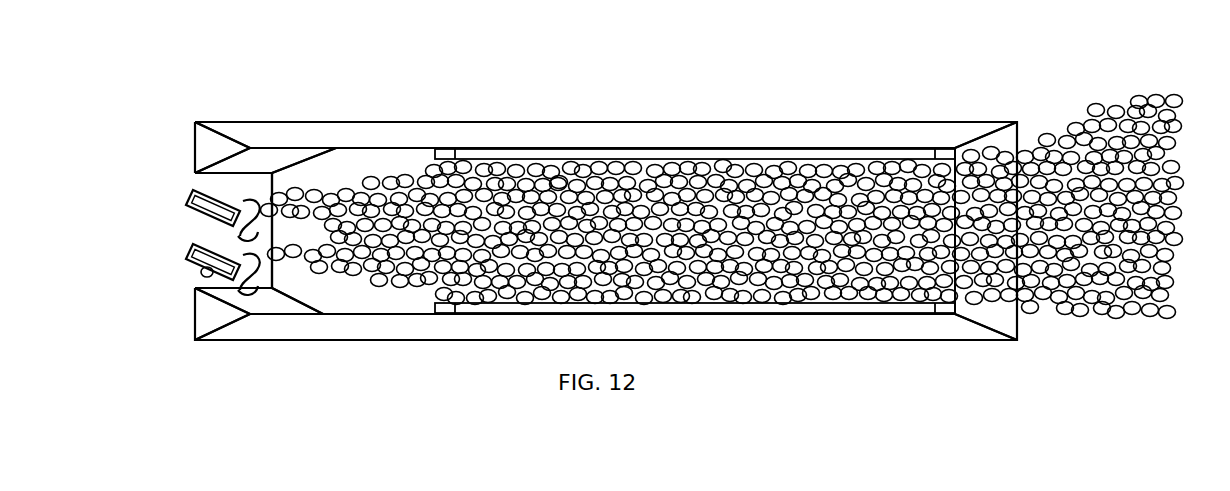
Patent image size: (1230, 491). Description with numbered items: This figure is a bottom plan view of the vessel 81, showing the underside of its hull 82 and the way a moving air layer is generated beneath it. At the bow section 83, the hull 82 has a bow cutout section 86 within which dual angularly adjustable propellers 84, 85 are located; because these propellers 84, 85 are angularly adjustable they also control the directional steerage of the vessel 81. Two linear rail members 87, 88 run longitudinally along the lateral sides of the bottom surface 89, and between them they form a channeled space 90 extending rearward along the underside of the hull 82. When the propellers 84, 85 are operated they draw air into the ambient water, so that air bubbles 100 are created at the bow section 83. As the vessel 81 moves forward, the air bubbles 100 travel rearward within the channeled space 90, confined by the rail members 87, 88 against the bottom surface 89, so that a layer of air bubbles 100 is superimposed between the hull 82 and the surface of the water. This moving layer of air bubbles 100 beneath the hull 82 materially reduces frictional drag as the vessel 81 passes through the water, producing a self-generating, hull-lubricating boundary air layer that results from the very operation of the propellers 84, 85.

The vessel 81 is at (780, 119).
The hull 82 is at (483, 126).
The bow section 83 is at (271, 174).
The angularly adjustable propeller 84 is at (264, 289).
The angularly adjustable propeller 85 is at (247, 200).
The bow cutout section 86 is at (262, 188).
The linear rail member 87 is at (653, 158).
The linear rail member 88 is at (738, 307).
The bottom surface 89 is at (907, 168).
The channeled space 90 is at (558, 178).
The air bubbles 100 is at (322, 268).